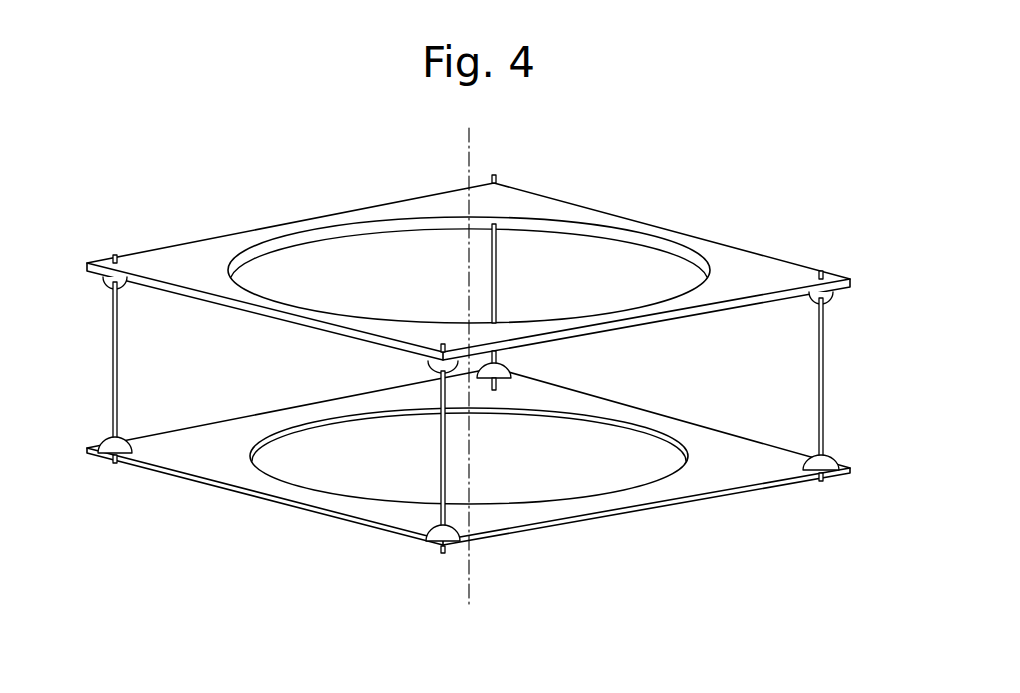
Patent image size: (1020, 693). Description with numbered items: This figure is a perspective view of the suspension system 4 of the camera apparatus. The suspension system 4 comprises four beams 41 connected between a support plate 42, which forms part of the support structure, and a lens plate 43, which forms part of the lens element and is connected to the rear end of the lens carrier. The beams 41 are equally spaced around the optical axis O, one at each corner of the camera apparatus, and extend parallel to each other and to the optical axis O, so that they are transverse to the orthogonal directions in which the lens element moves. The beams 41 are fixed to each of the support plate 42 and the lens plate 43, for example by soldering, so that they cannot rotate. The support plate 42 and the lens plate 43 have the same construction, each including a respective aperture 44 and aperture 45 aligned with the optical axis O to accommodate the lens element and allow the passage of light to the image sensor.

The suspension system 4 is at (273, 214).
The beams 41 is at (112, 366).
The support plate 42 is at (740, 264).
The lens plate 43 is at (748, 477).
The aperture 44 is at (641, 232).
The aperture 45 is at (650, 487).
The optical axis O is at (470, 141).